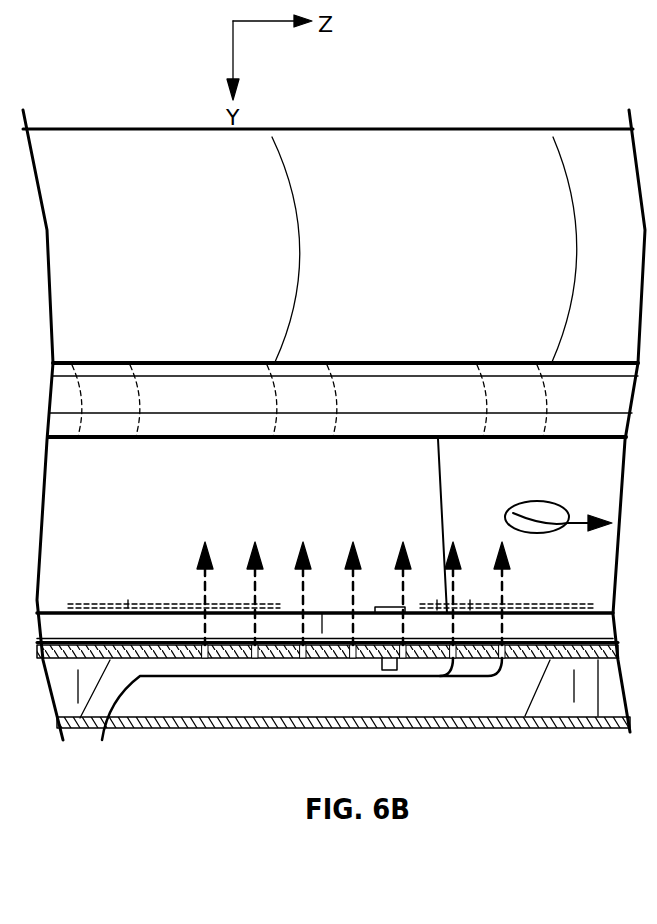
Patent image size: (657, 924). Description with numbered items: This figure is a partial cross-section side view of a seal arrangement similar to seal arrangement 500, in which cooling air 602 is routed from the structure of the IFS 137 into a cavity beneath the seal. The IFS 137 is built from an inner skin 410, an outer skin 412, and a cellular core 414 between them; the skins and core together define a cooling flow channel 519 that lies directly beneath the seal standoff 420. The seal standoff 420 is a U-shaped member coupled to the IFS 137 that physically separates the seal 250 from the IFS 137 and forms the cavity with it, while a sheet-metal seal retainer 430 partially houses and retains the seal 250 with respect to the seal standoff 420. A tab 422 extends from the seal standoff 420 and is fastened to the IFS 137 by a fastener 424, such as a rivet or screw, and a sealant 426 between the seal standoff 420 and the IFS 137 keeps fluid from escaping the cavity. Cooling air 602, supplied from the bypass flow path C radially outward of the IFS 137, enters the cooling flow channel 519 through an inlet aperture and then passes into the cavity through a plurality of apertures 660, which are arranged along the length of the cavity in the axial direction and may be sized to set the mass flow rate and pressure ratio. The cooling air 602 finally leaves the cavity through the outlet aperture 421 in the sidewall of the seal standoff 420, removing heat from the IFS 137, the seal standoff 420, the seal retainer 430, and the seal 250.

The seal arrangement 500 is at (487, 100).
The seal 250 is at (400, 289).
The seal retainer 430 is at (430, 412).
The seal standoff 420 is at (503, 485).
The outlet aperture 421 is at (541, 502).
The cooling air 602 is at (573, 528).
The IFS 137 is at (64, 627).
The plurality of apertures 660 is at (200, 677).
The fastener 424 is at (390, 610).
The cooling flow channel 519 is at (207, 697).
The outer skin 412 is at (118, 768).
The cellular core 414 is at (301, 700).
The inner skin 410 is at (358, 657).
The sealant 426 is at (409, 716).
The tab 422 is at (527, 717).
The bypass flow path C is at (577, 773).